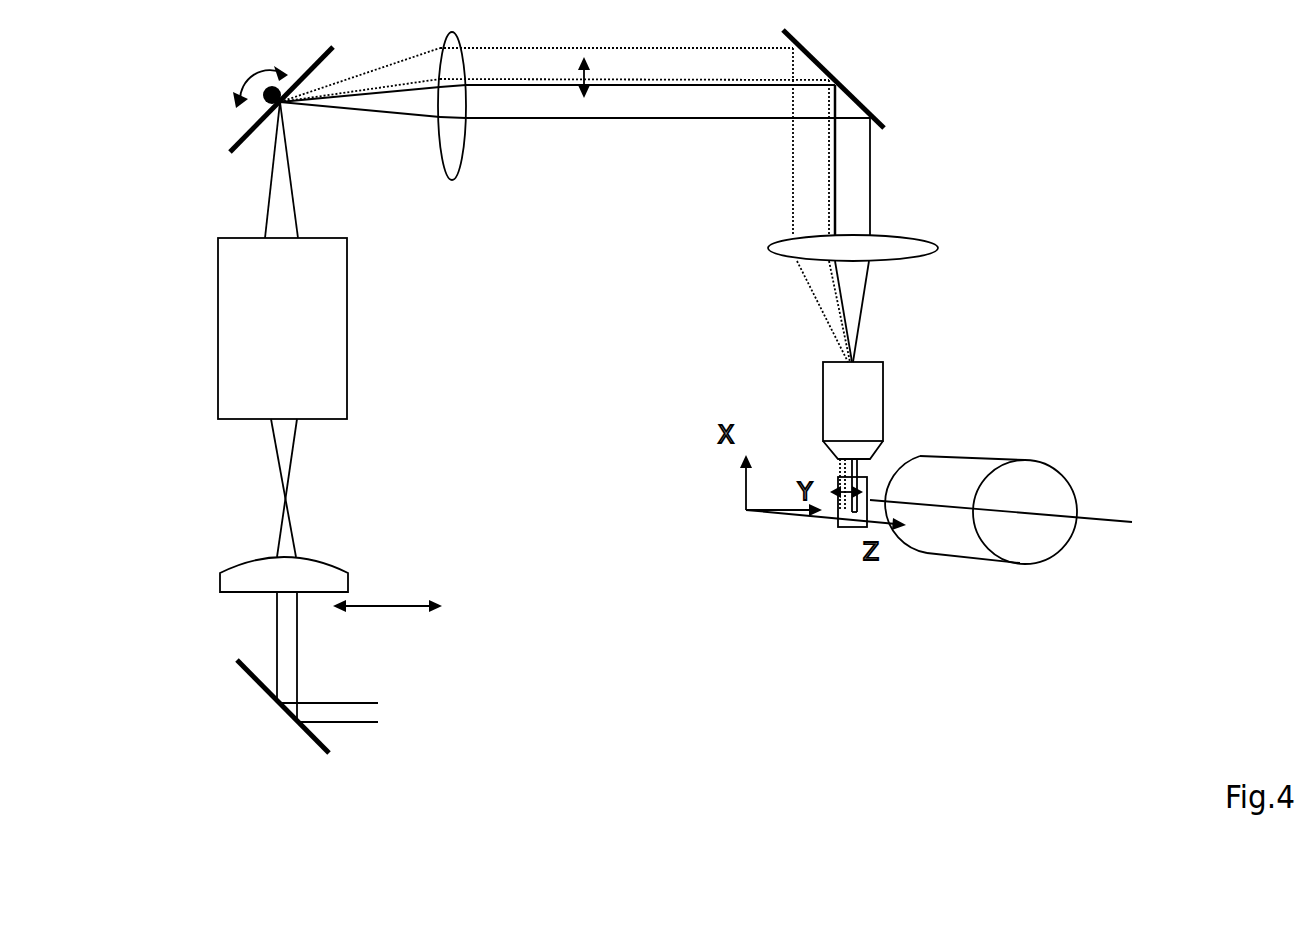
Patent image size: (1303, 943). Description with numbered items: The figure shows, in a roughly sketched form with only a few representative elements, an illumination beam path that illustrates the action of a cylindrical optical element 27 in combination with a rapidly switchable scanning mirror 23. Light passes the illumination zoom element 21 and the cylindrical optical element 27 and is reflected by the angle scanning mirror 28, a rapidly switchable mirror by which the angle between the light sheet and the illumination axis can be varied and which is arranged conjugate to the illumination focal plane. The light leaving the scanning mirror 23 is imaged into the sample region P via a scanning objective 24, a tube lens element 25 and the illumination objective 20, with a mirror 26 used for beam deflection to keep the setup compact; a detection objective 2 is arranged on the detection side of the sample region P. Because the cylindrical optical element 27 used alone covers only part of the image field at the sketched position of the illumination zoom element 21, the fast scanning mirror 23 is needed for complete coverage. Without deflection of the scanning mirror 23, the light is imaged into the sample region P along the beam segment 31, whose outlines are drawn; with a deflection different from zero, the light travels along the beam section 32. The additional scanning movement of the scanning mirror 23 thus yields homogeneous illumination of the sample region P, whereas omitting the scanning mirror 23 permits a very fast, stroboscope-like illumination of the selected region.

The detection objective 2 is at (983, 472).
The illumination objective 20 is at (876, 378).
The illumination zoom element 21 is at (343, 342).
The scanning mirror 23 is at (245, 135).
The scanning objective 24 is at (462, 168).
The tube lens element 25 is at (928, 248).
The mirror 26 is at (855, 96).
The cylindrical optical element 27 is at (343, 557).
The angle scanning mirror 28 is at (253, 680).
The beam segment 31 is at (634, 97).
The beam section 32 is at (700, 70).
The sample region P is at (858, 517).